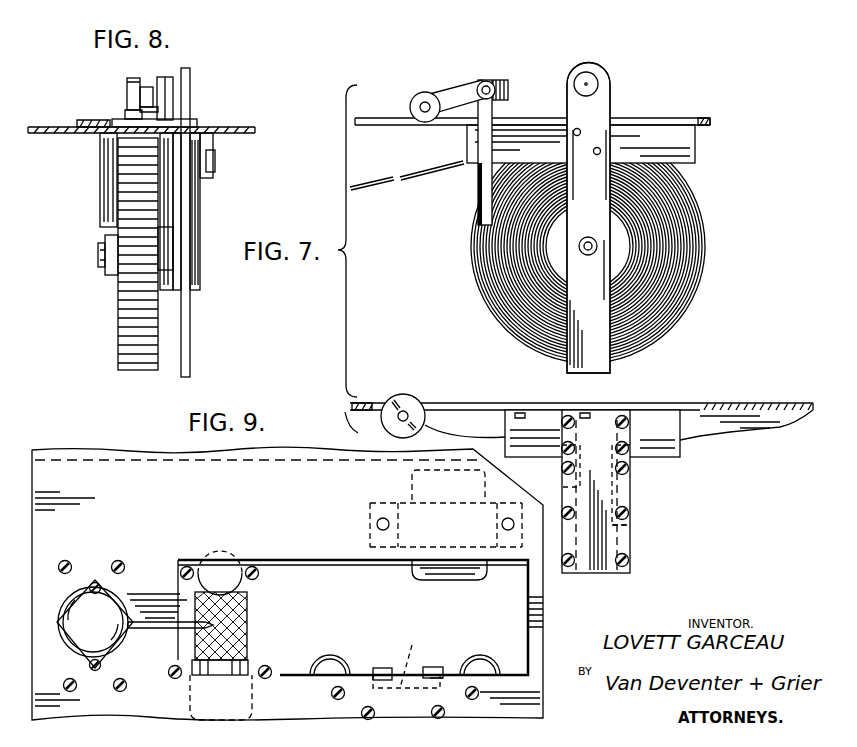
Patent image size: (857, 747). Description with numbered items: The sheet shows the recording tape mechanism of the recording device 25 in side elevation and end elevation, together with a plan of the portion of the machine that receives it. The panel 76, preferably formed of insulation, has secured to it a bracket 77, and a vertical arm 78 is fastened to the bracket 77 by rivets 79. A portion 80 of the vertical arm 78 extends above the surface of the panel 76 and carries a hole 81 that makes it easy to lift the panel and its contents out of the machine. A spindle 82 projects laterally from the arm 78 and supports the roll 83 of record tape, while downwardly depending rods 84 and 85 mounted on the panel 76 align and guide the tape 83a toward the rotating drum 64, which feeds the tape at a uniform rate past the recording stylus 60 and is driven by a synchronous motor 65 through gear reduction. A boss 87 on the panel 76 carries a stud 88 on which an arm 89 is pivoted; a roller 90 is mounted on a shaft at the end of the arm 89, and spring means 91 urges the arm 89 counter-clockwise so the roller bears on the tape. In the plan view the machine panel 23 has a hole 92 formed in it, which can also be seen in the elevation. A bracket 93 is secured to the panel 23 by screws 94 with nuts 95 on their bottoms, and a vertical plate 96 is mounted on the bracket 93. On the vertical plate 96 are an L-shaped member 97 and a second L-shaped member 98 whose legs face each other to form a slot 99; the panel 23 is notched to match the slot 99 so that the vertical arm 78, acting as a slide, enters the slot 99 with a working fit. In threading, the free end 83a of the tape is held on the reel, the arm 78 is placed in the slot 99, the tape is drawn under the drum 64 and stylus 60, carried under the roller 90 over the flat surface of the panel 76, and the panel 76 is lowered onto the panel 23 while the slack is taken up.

In FIG. 7, the panel 23 is at (781, 403).
In FIG. 9, the panel 23 is at (540, 640).
In FIG. 8, the recording device 25 is at (259, 121).
In FIG. 7, the recording device 25 is at (717, 117).
In FIG. 9, the recording stylus 60 is at (175, 629).
In FIG. 7, the rotating drum 64 is at (416, 397).
In FIG. 9, the rotating drum 64 is at (247, 612).
In FIG. 9, the synchronous motor 65 is at (252, 708).
In FIG. 8, the panel 76 is at (220, 125).
In FIG. 7, the panel 76 is at (680, 118).
In FIG. 8, the bracket 77 is at (213, 152).
In FIG. 7, the bracket 77 is at (695, 156).
In FIG. 8, the vertical arm 78 is at (190, 322).
In FIG. 7, the vertical arm 78 is at (588, 218).
In FIG. 7, the rivets 79 is at (597, 147).
In FIG. 7, the portion of vertical arm 80 is at (605, 104).
In FIG. 7, the hole 81 is at (598, 84).
In FIG. 8, the spindle 82 is at (195, 276).
In FIG. 8, the roll of record tape 83 is at (128, 301).
In FIG. 7, the roll of record tape 83 is at (703, 213).
In FIG. 7, the tape 83a is at (410, 180).
In FIG. 8, the downwardly depending rod 84 is at (106, 164).
In FIG. 8, the downwardly depending rod 85 is at (172, 196).
In FIG. 7, the boss 87 is at (492, 107).
In FIG. 8, the stud 88 is at (160, 78).
In FIG. 7, the stud 88 is at (488, 82).
In FIG. 8, the arm 89 is at (145, 88).
In FIG. 7, the arm 89 is at (452, 94).
In FIG. 8, the roller 90 is at (130, 98).
In FIG. 7, the roller 90 is at (420, 100).
In FIG. 8, the spring means 91 is at (165, 108).
In FIG. 7, the hole 92 is at (698, 403).
In FIG. 9, the hole 92 is at (300, 560).
In FIG. 7, the bracket 93 is at (665, 457).
In FIG. 9, the screws 94 is at (345, 693).
In FIG. 7, the nuts 95 is at (622, 414).
In FIG. 7, the vertical plate 96 is at (590, 570).
In FIG. 9, the vertical plate 96 is at (430, 667).
In FIG. 7, the L-shaped member 97 is at (562, 486).
In FIG. 9, the L-shaped member 97 is at (385, 668).
In FIG. 7, the second L-shaped member 98 is at (622, 493).
In FIG. 9, the second L-shaped member 98 is at (445, 670).
In FIG. 7, the slot 99 is at (622, 523).
In FIG. 9, the slot 99 is at (410, 645).